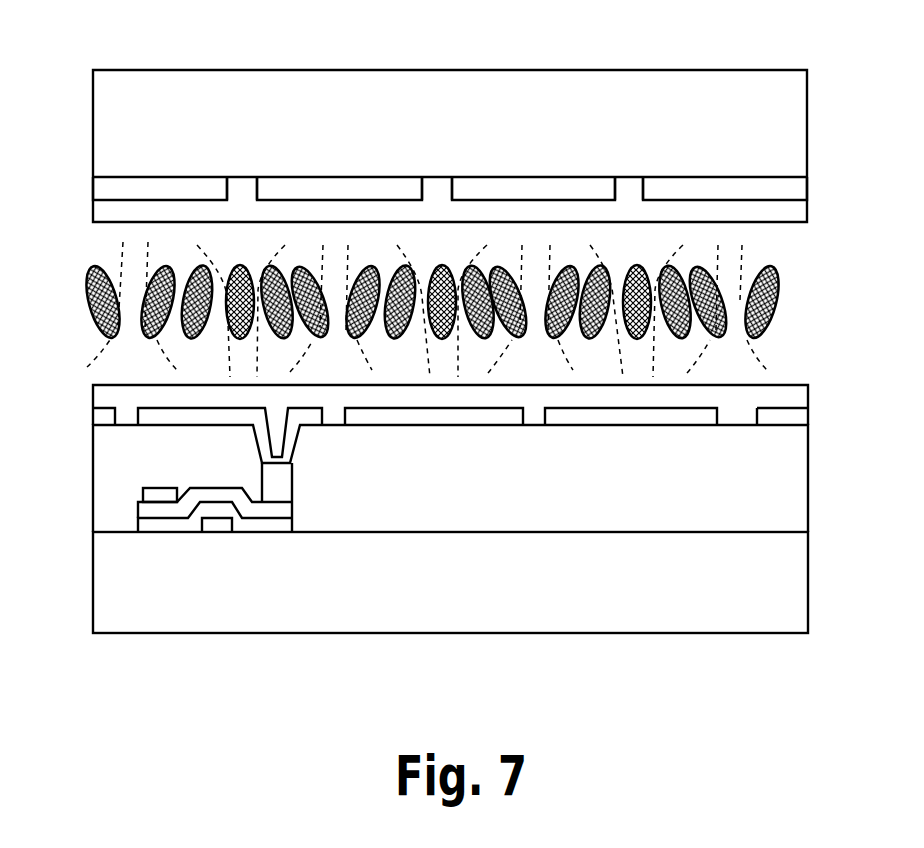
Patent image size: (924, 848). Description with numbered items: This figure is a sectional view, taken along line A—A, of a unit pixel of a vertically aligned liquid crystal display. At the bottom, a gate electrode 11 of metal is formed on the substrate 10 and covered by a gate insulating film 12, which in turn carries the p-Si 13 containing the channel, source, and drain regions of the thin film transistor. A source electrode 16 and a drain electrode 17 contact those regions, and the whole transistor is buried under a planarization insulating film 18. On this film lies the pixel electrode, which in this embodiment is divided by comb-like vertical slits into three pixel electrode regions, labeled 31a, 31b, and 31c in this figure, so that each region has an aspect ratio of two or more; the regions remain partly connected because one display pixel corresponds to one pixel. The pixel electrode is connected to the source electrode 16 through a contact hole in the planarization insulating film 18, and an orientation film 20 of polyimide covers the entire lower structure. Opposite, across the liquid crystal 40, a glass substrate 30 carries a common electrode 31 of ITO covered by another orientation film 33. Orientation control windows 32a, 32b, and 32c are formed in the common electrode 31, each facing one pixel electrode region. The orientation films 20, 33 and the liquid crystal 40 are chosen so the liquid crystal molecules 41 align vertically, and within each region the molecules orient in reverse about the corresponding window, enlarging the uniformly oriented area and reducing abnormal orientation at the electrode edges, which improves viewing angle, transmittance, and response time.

The substrate 10 is at (797, 562).
The gate electrode 11 is at (212, 520).
The gate insulating film 12 is at (268, 525).
The p-Si 13 is at (140, 510).
The source electrode 16 is at (278, 487).
The drain electrode 17 is at (145, 492).
The planarization insulating film 18 is at (800, 438).
The orientation film 20 is at (800, 400).
The glass substrate 30 is at (798, 110).
The common electrode 31 is at (137, 188).
The pixel electrode 31a is at (310, 418).
The pixel electrode 31b is at (498, 418).
The pixel electrode 31c is at (690, 420).
The orientation control window 32a is at (242, 188).
The orientation control window 32b is at (440, 188).
The orientation control window 32c is at (627, 188).
The orientation film 33 is at (798, 212).
The liquid crystal 40 is at (788, 362).
The liquid crystal molecules 41 is at (777, 292).